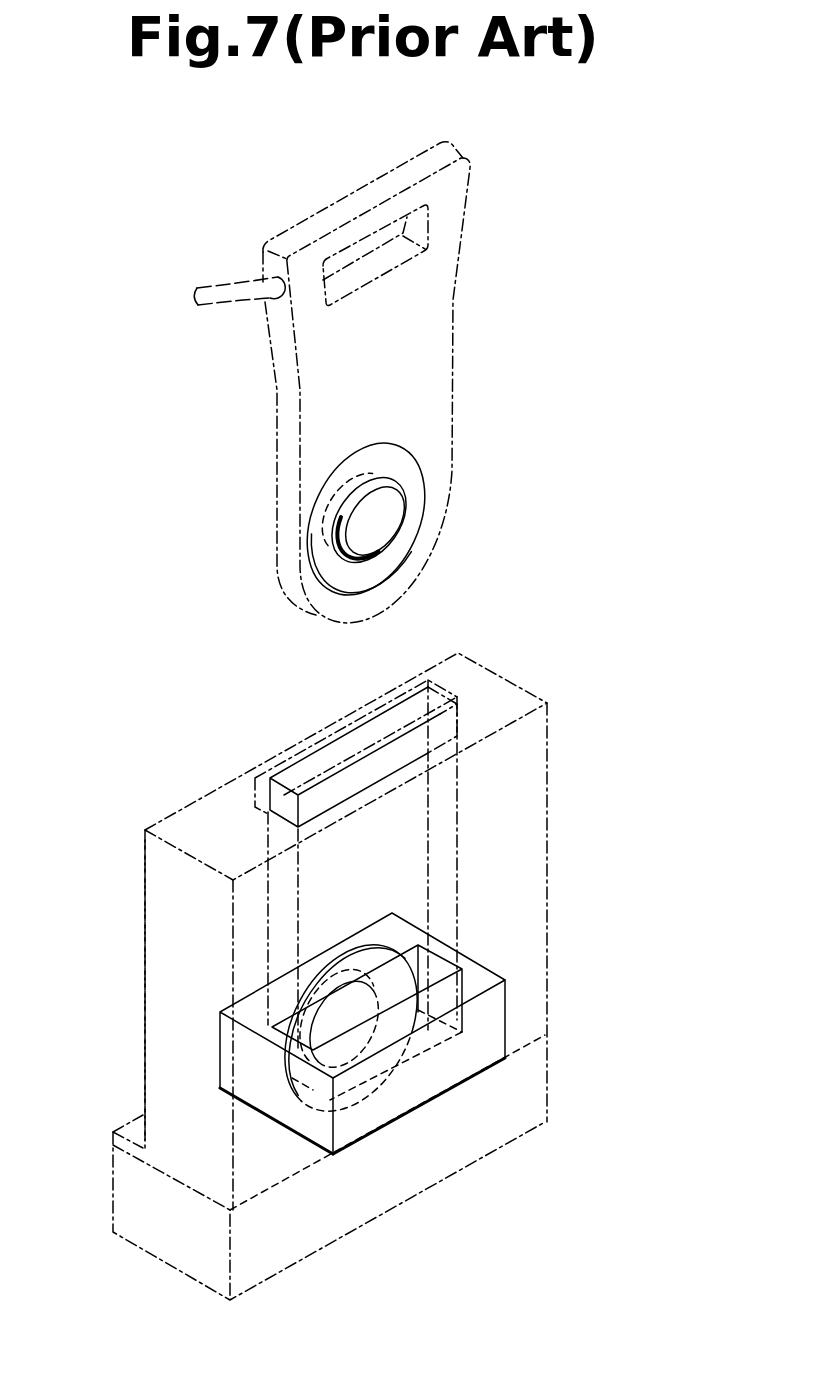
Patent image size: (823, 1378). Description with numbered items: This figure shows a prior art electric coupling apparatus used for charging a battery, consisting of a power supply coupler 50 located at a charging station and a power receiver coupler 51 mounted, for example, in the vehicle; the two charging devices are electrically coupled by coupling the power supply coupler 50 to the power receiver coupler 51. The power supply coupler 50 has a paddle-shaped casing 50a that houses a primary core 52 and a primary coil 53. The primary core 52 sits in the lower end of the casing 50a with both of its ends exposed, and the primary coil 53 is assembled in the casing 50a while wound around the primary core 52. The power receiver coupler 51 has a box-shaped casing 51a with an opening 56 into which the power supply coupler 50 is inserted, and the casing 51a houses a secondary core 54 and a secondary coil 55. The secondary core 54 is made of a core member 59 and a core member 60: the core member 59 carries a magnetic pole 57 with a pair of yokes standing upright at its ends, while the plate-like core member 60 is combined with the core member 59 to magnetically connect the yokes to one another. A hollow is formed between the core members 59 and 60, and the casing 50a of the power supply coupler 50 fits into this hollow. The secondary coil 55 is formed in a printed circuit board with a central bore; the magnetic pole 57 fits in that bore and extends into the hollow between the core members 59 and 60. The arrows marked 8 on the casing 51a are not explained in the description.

The thickness of base plate 8 is at (590, 972).
The power supply coupler 50 is at (453, 462).
The paddle-shaped casing 50a is at (445, 328).
The power receiver coupler 51 is at (547, 876).
The box-shaped casing 51a is at (146, 903).
The primary core 52 is at (380, 531).
The primary coil 53 is at (373, 450).
The secondary core 54 is at (247, 1106).
The secondary coil 55 is at (382, 945).
The opening 56 is at (327, 757).
The magnetic pole 57 is at (415, 950).
The core member 59 is at (406, 938).
The core member 60 is at (457, 1065).